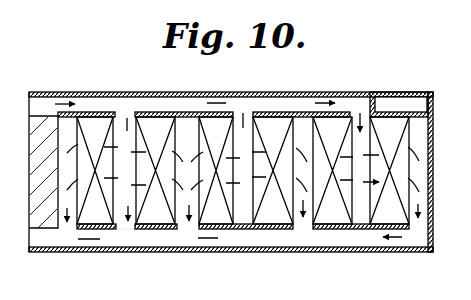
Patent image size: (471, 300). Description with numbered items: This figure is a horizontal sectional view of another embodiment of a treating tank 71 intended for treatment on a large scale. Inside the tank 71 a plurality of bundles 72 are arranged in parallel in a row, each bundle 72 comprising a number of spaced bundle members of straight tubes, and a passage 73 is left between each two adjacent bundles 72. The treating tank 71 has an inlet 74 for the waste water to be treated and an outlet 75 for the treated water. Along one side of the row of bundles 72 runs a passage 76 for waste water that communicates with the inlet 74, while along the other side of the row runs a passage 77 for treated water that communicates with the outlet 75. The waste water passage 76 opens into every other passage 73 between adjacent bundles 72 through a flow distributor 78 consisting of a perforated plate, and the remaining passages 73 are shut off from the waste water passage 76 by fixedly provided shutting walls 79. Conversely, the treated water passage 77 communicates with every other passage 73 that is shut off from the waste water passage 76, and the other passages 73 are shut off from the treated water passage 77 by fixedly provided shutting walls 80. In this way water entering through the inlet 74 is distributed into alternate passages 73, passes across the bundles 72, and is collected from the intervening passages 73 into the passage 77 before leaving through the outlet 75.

The treating tank 71 is at (350, 92).
The bundle 72 is at (150, 132).
The passage 73 is at (183, 205).
The inlet 74 is at (42, 103).
The outlet 75 is at (40, 242).
The passage for waste water 76 is at (272, 108).
The passage for treated water 77 is at (238, 236).
The flow distributor 78 is at (117, 116).
The shutting wall 79 is at (192, 113).
The shutting wall 80 is at (128, 226).